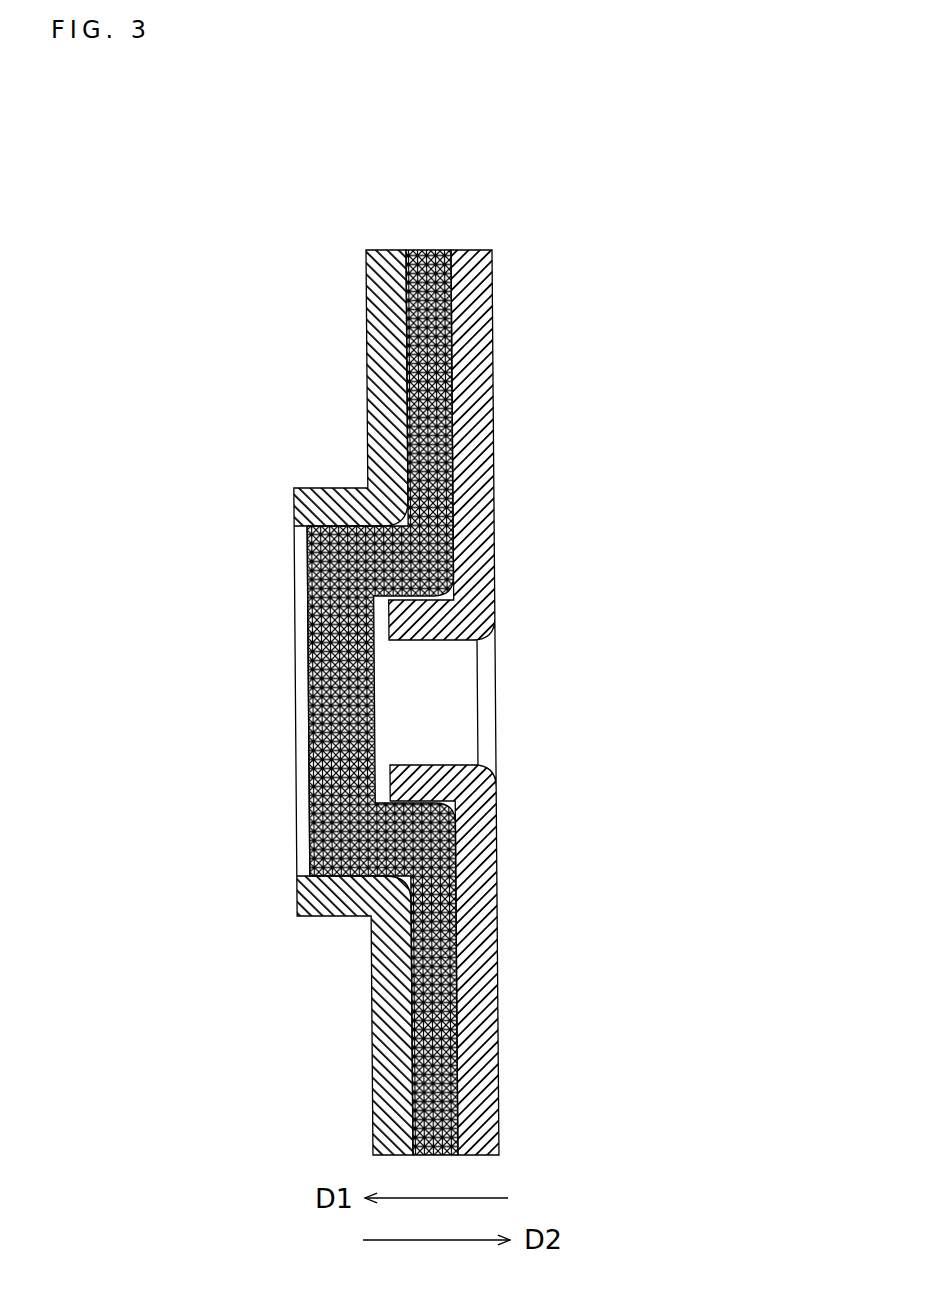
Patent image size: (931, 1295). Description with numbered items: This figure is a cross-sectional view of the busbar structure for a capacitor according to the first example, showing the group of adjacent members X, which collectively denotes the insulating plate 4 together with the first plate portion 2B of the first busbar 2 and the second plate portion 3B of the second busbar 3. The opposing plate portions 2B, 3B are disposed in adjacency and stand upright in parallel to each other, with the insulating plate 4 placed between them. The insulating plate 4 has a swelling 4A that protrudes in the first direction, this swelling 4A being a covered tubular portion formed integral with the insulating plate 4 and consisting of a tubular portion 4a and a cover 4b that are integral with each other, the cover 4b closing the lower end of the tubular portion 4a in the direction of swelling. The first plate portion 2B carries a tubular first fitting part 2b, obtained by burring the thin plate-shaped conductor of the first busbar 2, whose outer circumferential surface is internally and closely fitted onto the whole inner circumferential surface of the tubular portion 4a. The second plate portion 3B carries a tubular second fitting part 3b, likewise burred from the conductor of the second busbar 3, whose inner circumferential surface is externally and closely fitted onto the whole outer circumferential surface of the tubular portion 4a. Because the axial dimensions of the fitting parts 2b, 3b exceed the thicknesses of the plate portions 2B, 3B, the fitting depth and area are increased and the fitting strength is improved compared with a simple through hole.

The group of adjacent members X is at (523, 242).
The first busbar 2 is at (467, 235).
The second busbar 3 is at (375, 235).
The insulating plate 4 is at (420, 235).
The first plate portion 2B is at (472, 383).
The second plate portion 3B is at (358, 362).
The first fitting part 2b is at (411, 620).
The second fitting part 3b is at (302, 492).
The tubular portion 4a is at (358, 543).
The cover 4b is at (320, 686).
The swelling 4A is at (340, 845).